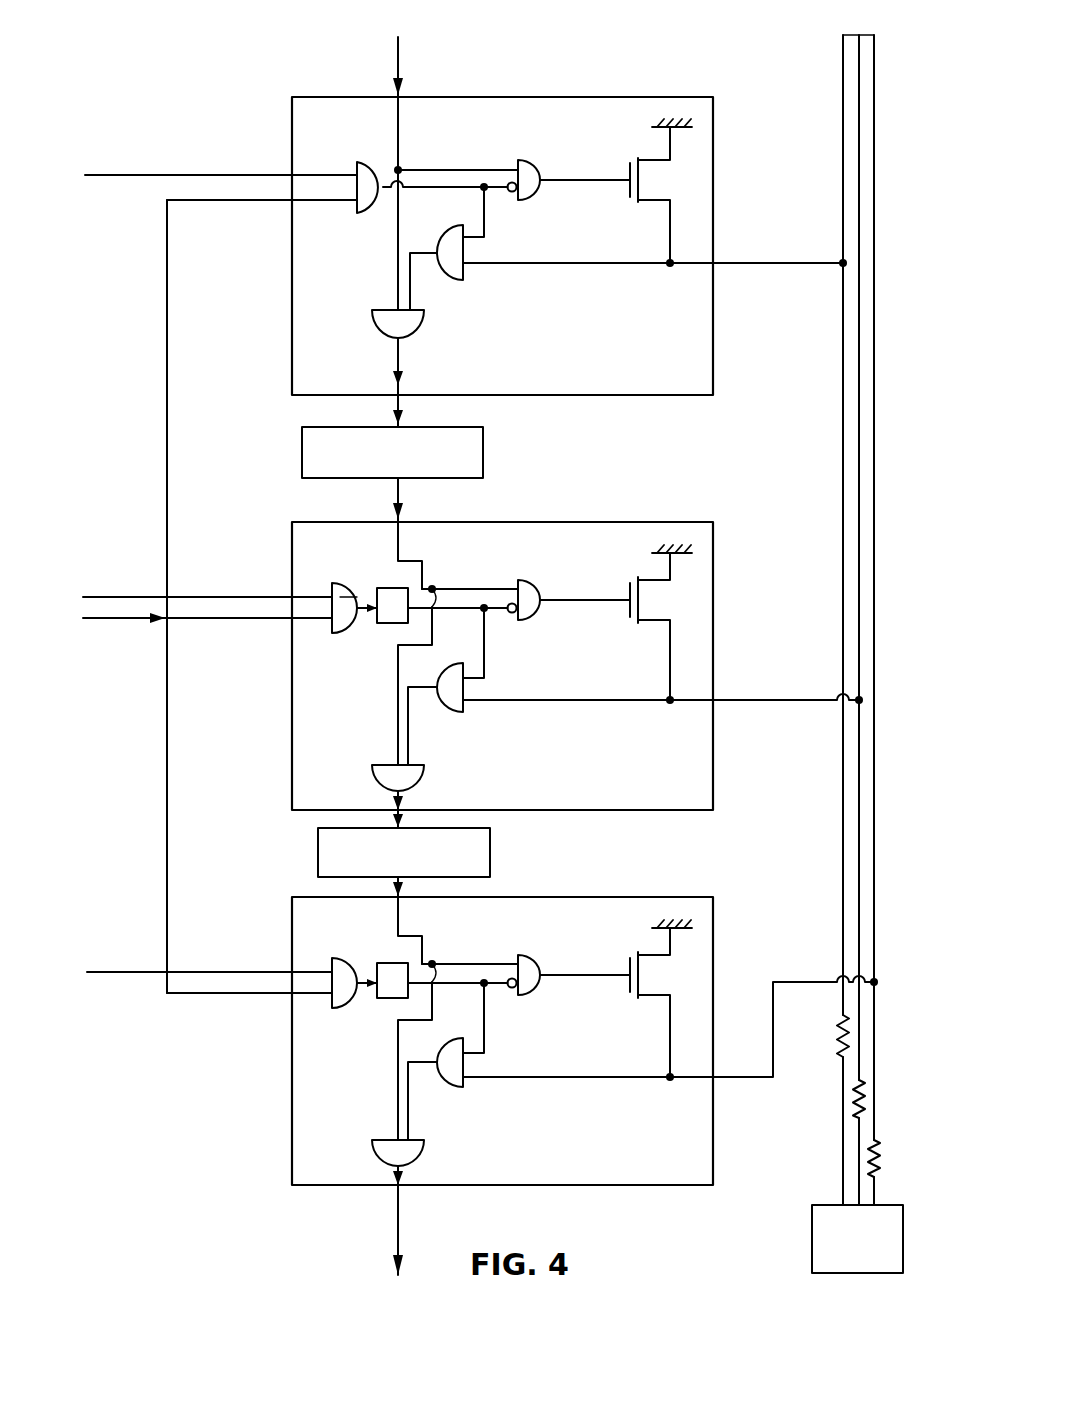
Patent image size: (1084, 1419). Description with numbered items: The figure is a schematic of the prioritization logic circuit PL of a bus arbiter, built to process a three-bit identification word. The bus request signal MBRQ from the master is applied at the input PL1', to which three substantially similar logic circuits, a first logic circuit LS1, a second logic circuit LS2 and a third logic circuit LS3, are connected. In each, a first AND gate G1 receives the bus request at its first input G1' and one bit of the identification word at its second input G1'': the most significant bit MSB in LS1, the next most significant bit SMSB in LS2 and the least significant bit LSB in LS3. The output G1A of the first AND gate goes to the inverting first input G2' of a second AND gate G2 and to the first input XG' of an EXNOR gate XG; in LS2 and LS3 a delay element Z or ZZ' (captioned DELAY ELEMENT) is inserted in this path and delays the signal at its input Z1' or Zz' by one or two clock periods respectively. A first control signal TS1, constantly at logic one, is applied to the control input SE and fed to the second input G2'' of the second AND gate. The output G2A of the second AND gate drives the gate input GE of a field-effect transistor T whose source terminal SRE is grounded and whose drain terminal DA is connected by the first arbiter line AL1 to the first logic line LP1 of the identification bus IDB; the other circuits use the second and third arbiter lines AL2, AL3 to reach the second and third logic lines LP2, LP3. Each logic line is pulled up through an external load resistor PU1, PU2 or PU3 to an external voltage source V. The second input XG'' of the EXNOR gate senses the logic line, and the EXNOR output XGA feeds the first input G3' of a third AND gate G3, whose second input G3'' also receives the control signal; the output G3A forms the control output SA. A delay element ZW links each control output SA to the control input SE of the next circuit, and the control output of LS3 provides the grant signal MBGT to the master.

The prioritization logic circuit PL is at (249, 97).
The first control signal TS1 is at (393, 58).
The control input SE is at (400, 95).
The first logic circuit LS1 is at (737, 104).
The second logic circuit LS2 is at (737, 548).
The third logic circuit LS3 is at (737, 921).
The most significant bit MSB is at (241, 160).
The next most significant bit SMSB is at (258, 583).
The bus request signal MBRQ is at (124, 600).
The input PL1' is at (204, 637).
The least significant bit LSB is at (250, 955).
The first AND gate G1 is at (355, 566).
The first input of first AND gate G1' is at (262, 617).
The second input of first AND gate G1'' is at (327, 552).
The output of first AND gate G1A is at (399, 163).
The second AND gate G2 is at (551, 566).
The inverting first input of second AND gate G2' is at (481, 609).
The second input of second AND gate G2'' is at (509, 545).
The output of second AND gate G2A is at (538, 198).
The third AND gate G3 is at (428, 739).
The first input of third AND gate G3' is at (448, 720).
The second input of third AND gate G3'' is at (361, 720).
The output of third AND gate G3A is at (405, 332).
The EXNOR gate XG is at (473, 667).
The first input of EXNOR gate XG' is at (463, 620).
The second input of EXNOR gate XG'' is at (501, 670).
The output of EXNOR gate XGA is at (432, 242).
The field-effect transistor T is at (693, 178).
The gate input GE is at (630, 190).
The source terminal SRE is at (660, 127).
The drain terminal DA is at (670, 230).
The first arbiter line AL1 is at (805, 266).
The second arbiter line AL2 is at (762, 702).
The third arbiter line AL3 is at (742, 1080).
The control output SA is at (402, 400).
The delay element ZW is at (396, 652).
The delay element Z is at (392, 605).
The input of delay element Z1' is at (400, 583).
The delay element ZZ' is at (392, 980).
The input of delay element Zz' is at (404, 956).
The delay element DELAY ELEMENT is at (423, 583).
The grant signal MBGT is at (397, 1205).
The first logic line LP1 is at (843, 648).
The second logic line LP2 is at (858, 760).
The third logic line LP3 is at (876, 735).
The identification bus IDB is at (890, 628).
The first load resistor PU1 is at (840, 1043).
The second load resistor PU2 is at (855, 1117).
The third load resistor PU3 is at (870, 1173).
The external voltage source V is at (857, 1239).